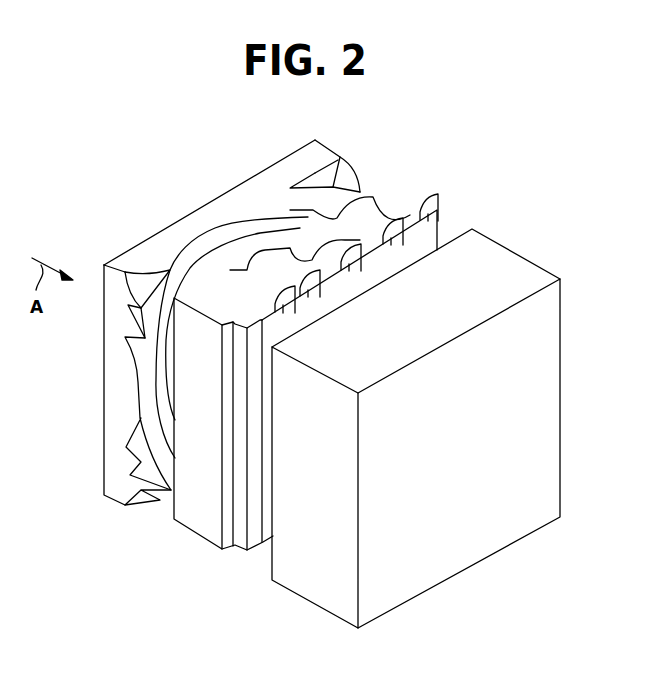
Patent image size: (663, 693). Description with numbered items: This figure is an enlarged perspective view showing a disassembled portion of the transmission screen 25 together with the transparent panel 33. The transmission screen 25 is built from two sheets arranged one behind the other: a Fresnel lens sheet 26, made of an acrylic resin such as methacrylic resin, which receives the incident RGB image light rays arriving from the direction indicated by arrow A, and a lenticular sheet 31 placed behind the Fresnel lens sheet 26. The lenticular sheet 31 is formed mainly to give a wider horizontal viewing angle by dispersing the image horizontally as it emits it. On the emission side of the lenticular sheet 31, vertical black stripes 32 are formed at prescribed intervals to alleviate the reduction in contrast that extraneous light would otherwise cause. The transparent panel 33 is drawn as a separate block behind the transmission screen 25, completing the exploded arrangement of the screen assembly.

The transmission screen 25 is at (300, 384).
The Fresnel lens sheet 26 is at (175, 217).
The lenticular sheet 31 is at (190, 522).
The vertical black stripes 32 is at (247, 555).
The transparent panel 33 is at (530, 272).